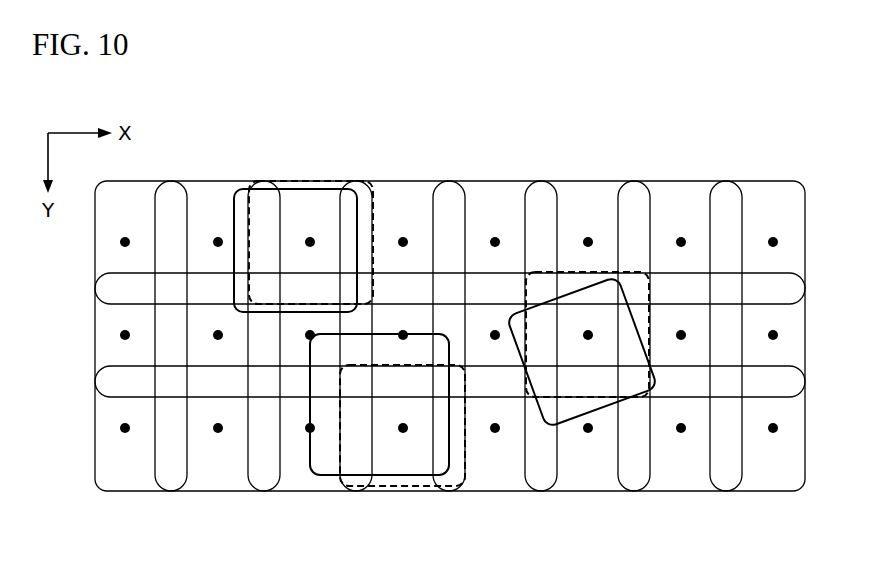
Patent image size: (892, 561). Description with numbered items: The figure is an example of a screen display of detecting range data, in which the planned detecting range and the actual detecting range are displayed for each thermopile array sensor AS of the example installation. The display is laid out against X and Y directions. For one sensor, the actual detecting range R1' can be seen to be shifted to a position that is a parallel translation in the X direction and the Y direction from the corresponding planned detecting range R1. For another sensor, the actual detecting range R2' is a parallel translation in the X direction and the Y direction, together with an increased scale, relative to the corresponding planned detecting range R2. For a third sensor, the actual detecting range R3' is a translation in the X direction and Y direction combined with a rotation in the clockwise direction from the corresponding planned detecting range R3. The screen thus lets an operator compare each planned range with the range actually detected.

The thermopile array sensor AS is at (450, 336).
The planned detecting range R1 is at (297, 219).
The actual detecting range R1' is at (311, 215).
The planned detecting range R2 is at (379, 436).
The actual detecting range R2' is at (401, 452).
The planned detecting range R3 is at (581, 324).
The actual detecting range R3' is at (587, 372).